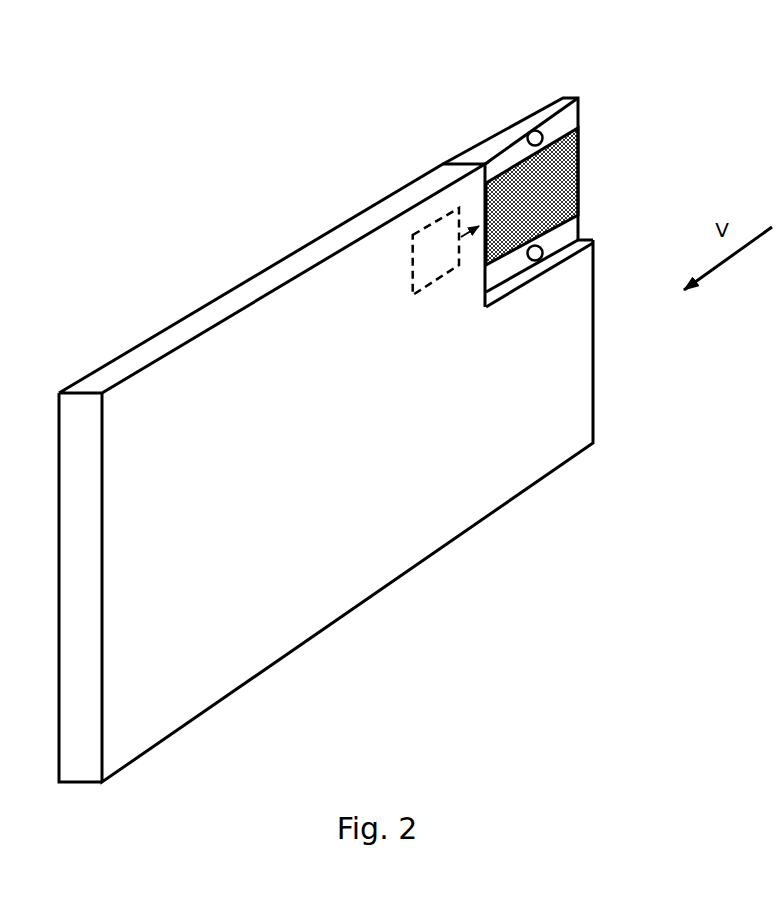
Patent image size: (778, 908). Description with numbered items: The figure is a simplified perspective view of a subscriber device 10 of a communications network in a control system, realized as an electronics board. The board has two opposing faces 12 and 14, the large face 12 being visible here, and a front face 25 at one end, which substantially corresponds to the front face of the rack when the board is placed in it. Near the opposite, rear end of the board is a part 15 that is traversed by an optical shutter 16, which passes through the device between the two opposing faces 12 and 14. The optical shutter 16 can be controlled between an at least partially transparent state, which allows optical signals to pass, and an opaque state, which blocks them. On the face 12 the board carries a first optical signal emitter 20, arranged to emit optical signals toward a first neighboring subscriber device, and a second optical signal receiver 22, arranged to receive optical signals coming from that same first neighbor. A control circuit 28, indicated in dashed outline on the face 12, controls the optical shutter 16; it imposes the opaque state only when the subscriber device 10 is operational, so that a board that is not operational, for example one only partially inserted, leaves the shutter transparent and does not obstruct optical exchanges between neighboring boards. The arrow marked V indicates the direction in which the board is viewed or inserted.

The subscriber device 10 is at (70, 220).
The face 12 is at (408, 534).
The face 14 is at (274, 236).
The part 15 is at (609, 108).
The optical shutter 16 is at (572, 177).
The first optical signal emitter 20 is at (535, 130).
The second optical signal receiver 22 is at (535, 262).
The front face 25 is at (80, 783).
The control circuit 28 is at (433, 285).